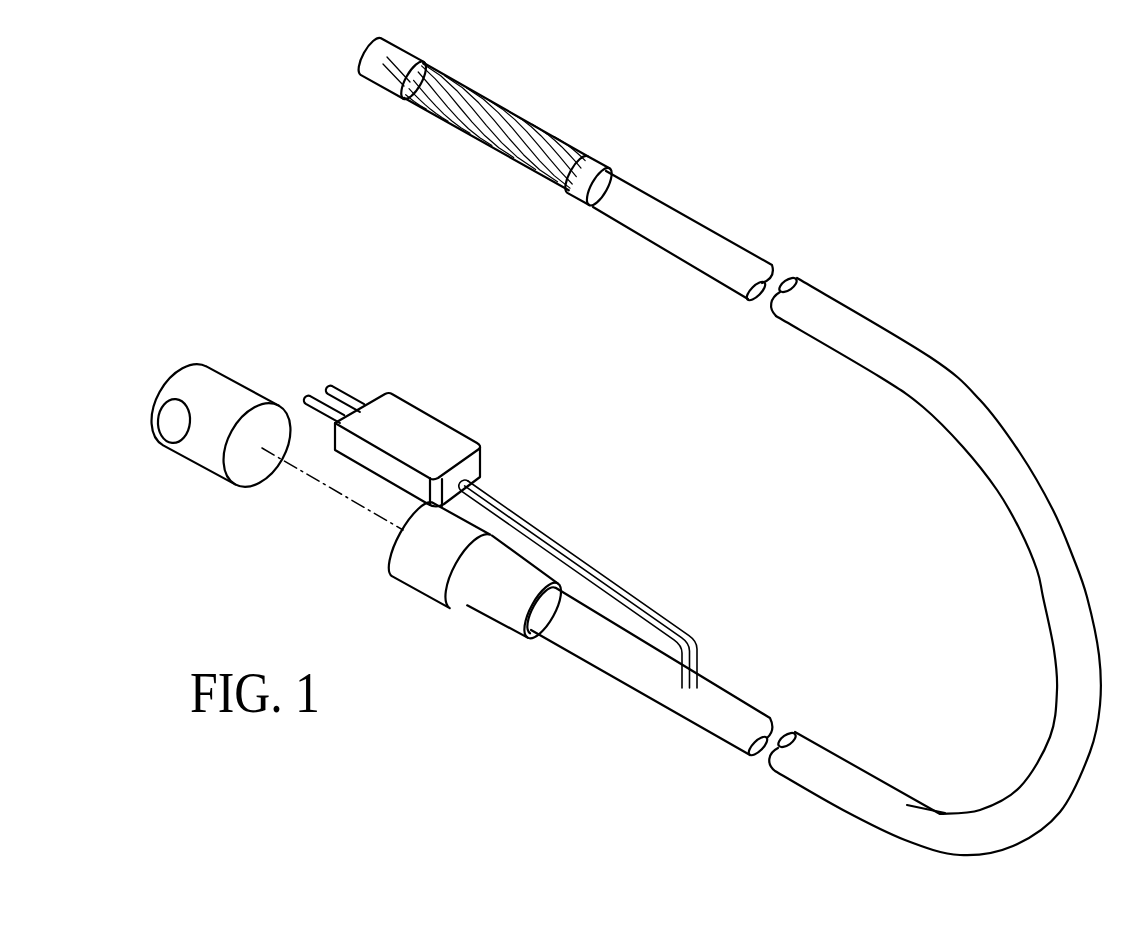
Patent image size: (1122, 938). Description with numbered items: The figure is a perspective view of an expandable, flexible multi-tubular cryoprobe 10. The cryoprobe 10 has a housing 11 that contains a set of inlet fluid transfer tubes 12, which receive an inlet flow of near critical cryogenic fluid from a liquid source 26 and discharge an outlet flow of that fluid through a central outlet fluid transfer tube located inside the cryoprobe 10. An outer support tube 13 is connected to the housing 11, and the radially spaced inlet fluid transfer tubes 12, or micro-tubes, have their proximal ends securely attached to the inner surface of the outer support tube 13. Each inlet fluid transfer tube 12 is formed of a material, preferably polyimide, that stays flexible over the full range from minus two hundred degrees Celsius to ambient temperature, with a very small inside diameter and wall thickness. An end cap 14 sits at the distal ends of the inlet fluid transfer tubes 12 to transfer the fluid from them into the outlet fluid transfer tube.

The expandable, flexible multi-tubular cryoprobe 10 is at (912, 287).
The housing 11 is at (688, 240).
The inlet fluid transfer tubes 12 is at (488, 106).
The outer support tube 13 is at (599, 167).
The end cap 14 is at (358, 75).
The liquid source 26 is at (202, 446).